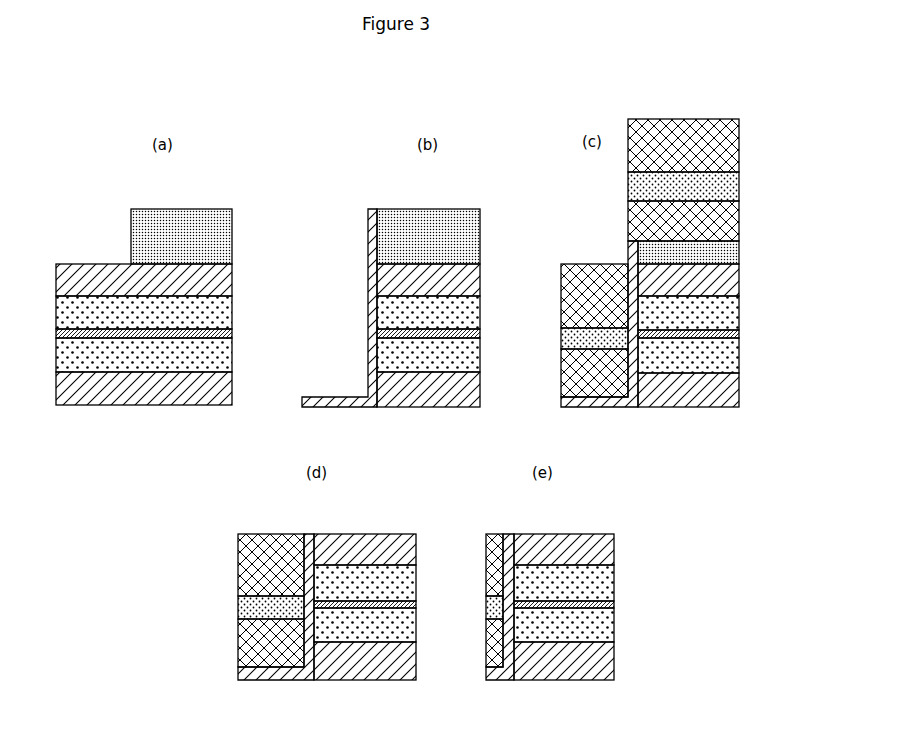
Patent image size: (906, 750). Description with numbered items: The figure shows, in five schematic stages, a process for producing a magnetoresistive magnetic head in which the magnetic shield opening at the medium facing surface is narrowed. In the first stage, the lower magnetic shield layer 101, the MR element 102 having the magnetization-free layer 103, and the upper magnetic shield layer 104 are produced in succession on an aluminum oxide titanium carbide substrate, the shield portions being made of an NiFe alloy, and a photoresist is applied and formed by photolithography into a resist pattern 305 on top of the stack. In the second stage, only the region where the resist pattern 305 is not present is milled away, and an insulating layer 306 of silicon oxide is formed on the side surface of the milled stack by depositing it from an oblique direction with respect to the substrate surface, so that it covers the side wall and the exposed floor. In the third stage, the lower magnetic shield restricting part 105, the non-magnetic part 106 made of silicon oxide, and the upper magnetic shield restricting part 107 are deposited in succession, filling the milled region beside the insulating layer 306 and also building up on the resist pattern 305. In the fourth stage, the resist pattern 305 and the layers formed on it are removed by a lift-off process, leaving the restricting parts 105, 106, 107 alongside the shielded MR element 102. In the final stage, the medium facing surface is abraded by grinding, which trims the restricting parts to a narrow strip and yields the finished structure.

The lower magnetic shield layer 101 is at (232, 382).
The MR element 102 is at (234, 372).
The magnetization-free layer 103 is at (234, 329).
The upper magnetic shield layer 104 is at (232, 268).
The lower magnetic shield restricting part 105 is at (561, 378).
The non-magnetic part 106 is at (561, 346).
The upper magnetic shield restricting part 107 is at (561, 298).
The resist pattern 305 is at (190, 209).
The insulating layer 306 is at (368, 237).